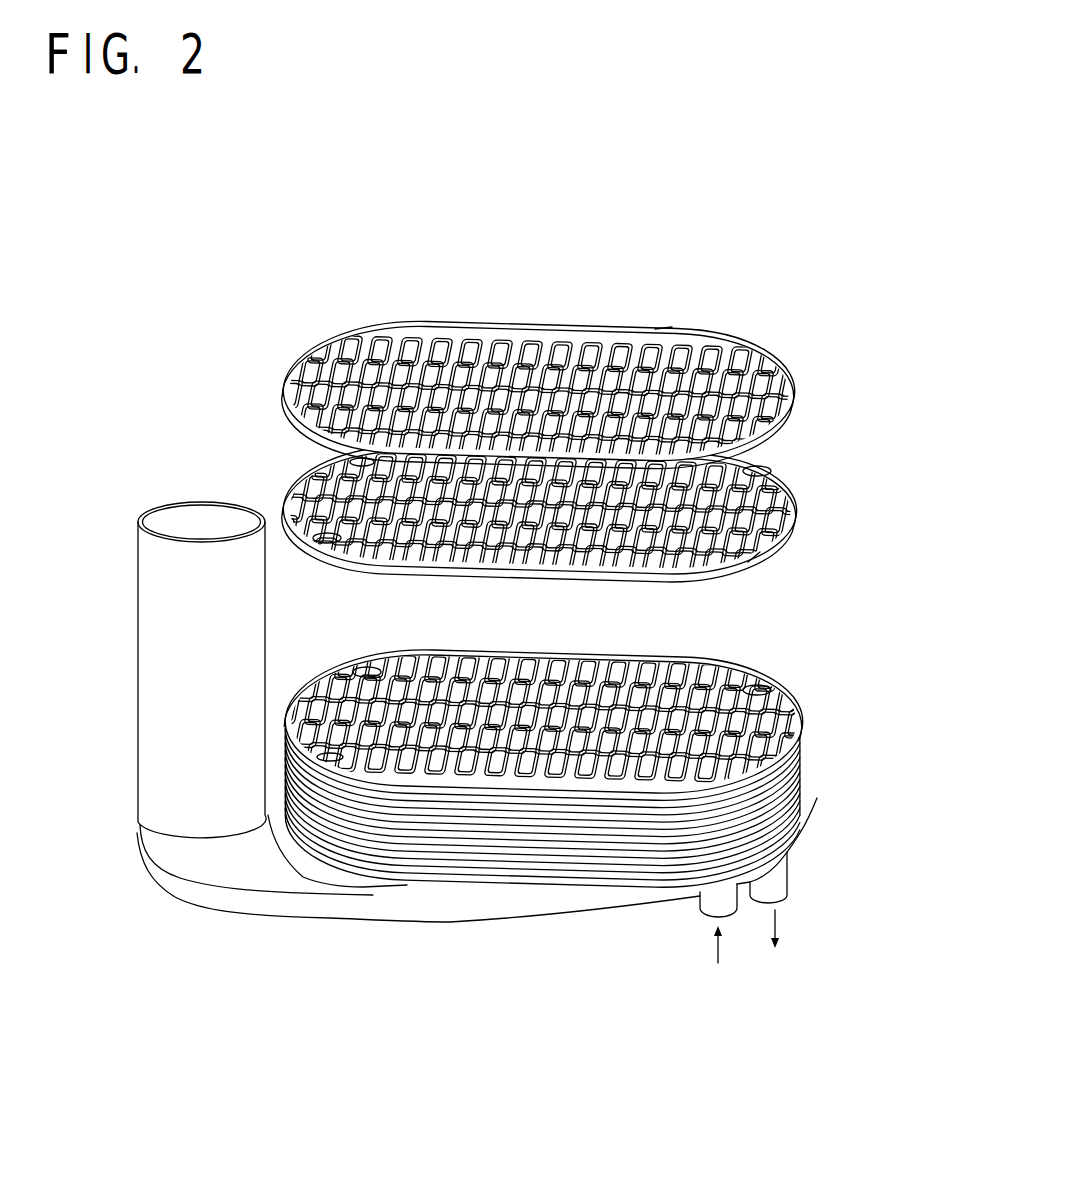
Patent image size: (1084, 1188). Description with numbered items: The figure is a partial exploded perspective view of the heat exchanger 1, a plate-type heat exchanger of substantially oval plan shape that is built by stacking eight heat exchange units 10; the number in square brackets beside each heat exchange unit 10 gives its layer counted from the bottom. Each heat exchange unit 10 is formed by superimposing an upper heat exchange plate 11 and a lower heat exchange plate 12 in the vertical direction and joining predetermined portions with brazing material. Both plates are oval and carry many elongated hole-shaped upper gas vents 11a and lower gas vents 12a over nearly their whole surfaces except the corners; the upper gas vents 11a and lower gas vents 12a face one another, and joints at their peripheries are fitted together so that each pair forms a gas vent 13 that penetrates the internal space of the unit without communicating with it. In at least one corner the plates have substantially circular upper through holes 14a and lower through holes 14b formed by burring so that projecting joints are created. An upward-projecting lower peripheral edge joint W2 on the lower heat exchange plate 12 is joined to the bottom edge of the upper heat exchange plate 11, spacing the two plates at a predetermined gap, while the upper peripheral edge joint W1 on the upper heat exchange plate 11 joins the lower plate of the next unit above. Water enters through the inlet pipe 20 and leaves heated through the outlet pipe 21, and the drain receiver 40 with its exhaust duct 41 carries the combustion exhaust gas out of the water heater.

The heat exchanger 1 is at (800, 302).
The heat exchange unit 10 is at (878, 330).
The upper heat exchange plate 11 is at (772, 362).
The upper gas vent 11a is at (488, 343).
The lower heat exchange plate 12 is at (760, 450).
The lower gas vent 12a is at (340, 508).
The gas vent 13 is at (668, 673).
The upper through hole 14a is at (370, 662).
The lower through hole 14b is at (357, 457).
The inlet pipe 20 is at (723, 903).
The outlet pipe 21 is at (777, 882).
The drain receiver 40 is at (409, 913).
The exhaust duct 41 is at (142, 795).
The upper peripheral edge joint W1 is at (663, 330).
The lower peripheral edge joint W2 is at (760, 550).